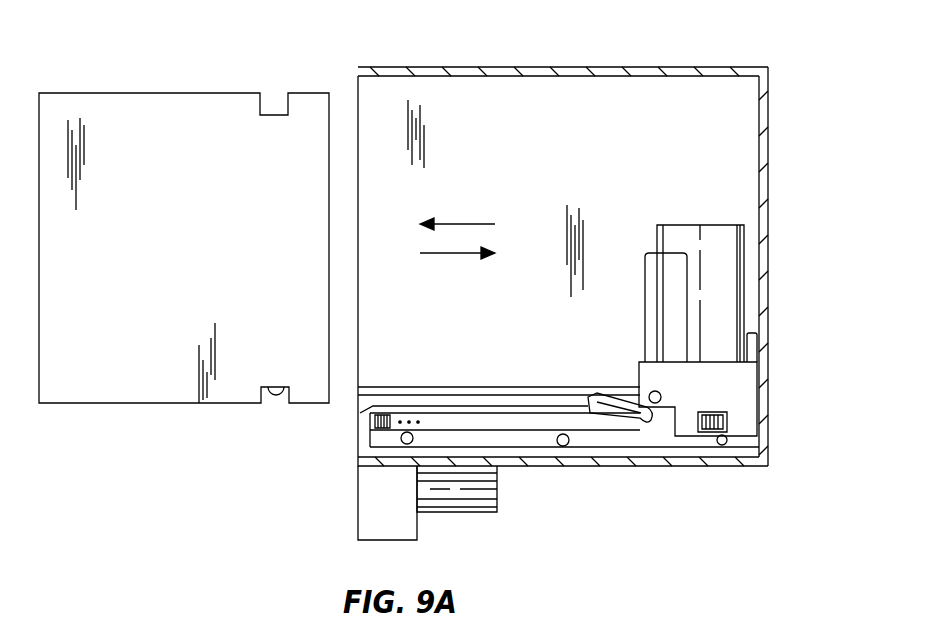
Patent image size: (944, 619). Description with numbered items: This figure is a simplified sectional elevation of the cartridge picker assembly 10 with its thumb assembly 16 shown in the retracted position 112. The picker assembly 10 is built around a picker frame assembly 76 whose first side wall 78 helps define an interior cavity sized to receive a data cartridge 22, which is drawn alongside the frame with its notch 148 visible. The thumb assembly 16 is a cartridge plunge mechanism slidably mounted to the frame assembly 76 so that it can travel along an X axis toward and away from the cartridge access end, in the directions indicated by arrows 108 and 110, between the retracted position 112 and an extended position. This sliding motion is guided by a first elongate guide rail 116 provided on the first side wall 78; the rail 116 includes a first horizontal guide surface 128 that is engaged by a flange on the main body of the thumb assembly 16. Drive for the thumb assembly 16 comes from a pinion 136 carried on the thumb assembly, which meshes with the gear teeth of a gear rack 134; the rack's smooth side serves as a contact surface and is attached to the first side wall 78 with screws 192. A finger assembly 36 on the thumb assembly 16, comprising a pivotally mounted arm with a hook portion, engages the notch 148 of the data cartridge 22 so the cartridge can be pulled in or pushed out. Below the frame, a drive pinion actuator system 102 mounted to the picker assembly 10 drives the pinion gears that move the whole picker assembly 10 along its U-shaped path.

The cartridge picker assembly 10 is at (337, 37).
The data cartridge 22 is at (176, 88).
The notch 148 is at (279, 386).
The first side wall 78 is at (626, 66).
The picker frame assembly 76 is at (770, 119).
The thumb assembly 16 is at (692, 222).
The arrow 108 is at (478, 224).
The arrow 110 is at (440, 255).
The first horizontal guide surface 128 is at (461, 404).
The first elongate guide rail 116 is at (520, 386).
The retracted position 112 is at (766, 367).
The pinion 136 is at (728, 420).
The gear rack 134 is at (372, 436).
The screws 192 is at (403, 445).
The finger assembly 36 is at (621, 424).
The drive pinion actuator system 102 is at (452, 516).